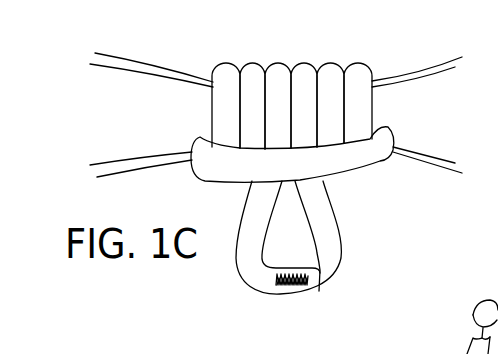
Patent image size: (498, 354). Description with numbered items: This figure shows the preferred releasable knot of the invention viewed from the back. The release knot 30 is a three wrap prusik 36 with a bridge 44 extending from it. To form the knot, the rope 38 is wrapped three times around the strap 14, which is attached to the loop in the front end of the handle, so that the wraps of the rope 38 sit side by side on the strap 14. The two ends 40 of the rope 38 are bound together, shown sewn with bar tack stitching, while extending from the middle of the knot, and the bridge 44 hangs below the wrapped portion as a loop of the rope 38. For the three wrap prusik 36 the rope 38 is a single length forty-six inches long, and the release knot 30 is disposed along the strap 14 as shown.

The strap 14 is at (166, 123).
The release knot 30 is at (212, 99).
The three wrap prusik 36 is at (327, 63).
The rope 38 is at (258, 176).
The ends 40 is at (302, 293).
The bridge 44 is at (340, 222).